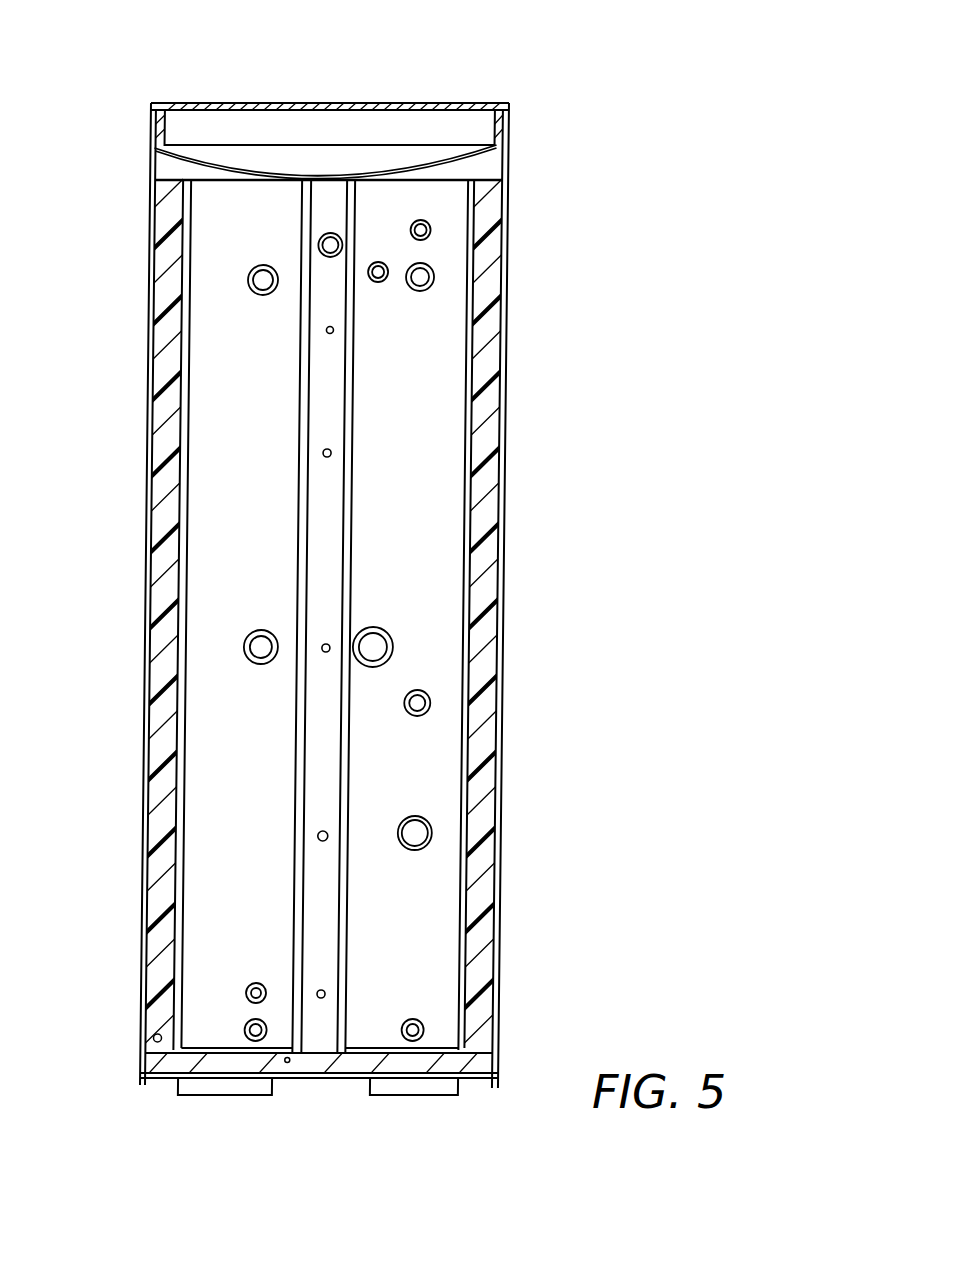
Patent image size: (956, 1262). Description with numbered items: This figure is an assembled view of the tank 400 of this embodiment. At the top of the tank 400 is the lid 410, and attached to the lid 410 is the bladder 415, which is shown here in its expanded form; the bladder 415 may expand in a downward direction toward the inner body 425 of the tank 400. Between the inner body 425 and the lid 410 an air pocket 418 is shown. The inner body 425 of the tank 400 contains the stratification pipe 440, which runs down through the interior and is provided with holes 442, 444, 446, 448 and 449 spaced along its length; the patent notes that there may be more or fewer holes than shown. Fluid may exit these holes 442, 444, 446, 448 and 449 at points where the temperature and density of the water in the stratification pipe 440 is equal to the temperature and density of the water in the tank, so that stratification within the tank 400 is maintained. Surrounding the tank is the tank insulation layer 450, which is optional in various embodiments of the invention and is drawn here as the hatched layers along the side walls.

The tank 400 is at (548, 96).
The lid 410 is at (481, 126).
The bladder 415 is at (499, 153).
The air pocket 418 is at (181, 167).
The inner body 425 is at (242, 762).
The stratification pipe 440 is at (323, 535).
The hole 442 is at (336, 331).
The hole 444 is at (335, 453).
The hole 446 is at (328, 644).
The hole 448 is at (325, 831).
The hole 449 is at (323, 991).
The tank insulation layer 450 is at (170, 369).